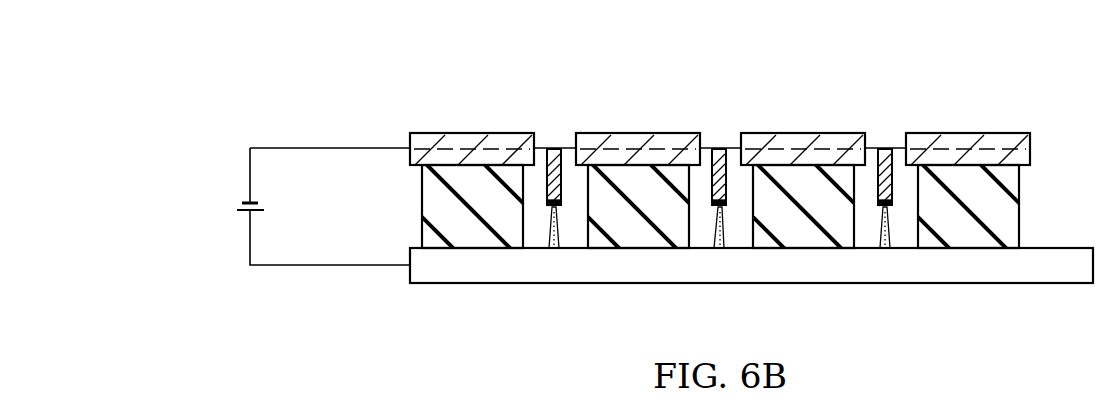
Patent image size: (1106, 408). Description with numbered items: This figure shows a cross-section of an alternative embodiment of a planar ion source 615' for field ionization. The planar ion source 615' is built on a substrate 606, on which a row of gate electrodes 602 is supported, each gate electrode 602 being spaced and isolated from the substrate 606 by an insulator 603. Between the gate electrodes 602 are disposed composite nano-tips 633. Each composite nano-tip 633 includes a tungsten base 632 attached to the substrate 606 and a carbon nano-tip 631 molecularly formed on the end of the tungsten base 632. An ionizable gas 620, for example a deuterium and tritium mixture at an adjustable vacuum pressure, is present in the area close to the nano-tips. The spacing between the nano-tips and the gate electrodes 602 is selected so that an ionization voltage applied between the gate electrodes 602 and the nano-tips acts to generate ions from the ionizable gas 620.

The planar ion source 615' is at (554, 136).
The gate electrode 602 is at (472, 130).
The insulator 603 is at (465, 240).
The substrate 606 is at (908, 273).
The ionizable gas 620 is at (537, 240).
The carbon nano-tip 631 is at (550, 148).
The tungsten base 632 is at (555, 240).
The composite nano-tip 633 is at (743, 112).